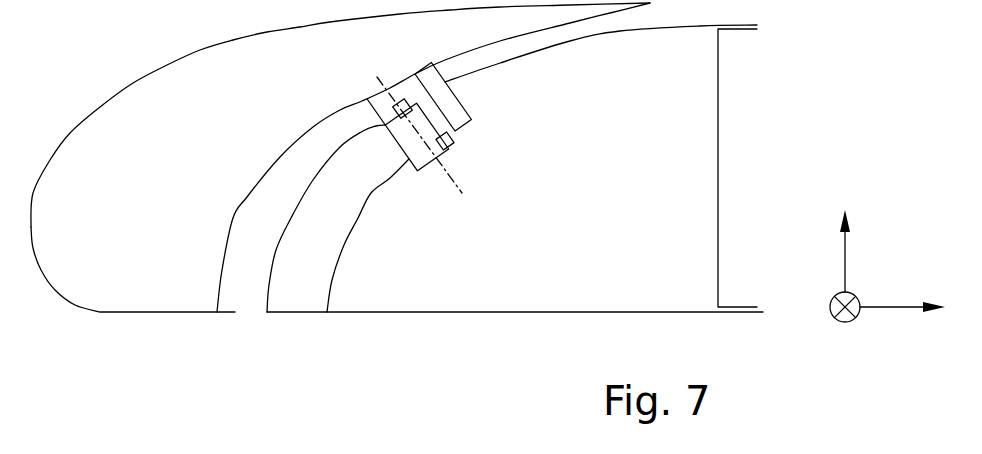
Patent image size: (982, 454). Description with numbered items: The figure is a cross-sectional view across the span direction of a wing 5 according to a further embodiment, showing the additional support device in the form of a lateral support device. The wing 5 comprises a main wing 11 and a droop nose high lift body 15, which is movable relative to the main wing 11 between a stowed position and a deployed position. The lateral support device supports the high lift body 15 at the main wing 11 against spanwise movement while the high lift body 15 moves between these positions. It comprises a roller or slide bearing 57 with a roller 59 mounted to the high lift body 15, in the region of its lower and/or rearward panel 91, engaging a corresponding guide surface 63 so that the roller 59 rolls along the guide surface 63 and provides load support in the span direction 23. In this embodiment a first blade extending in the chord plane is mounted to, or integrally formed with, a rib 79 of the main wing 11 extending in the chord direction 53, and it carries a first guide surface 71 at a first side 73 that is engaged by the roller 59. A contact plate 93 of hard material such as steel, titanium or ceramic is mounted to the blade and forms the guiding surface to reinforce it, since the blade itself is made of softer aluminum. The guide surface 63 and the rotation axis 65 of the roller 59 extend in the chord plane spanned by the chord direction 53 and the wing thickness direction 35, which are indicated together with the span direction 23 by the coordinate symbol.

The wing 5 is at (112, 75).
The high lift body 15 is at (179, 191).
The lower and/or rearward panel 91 is at (247, 197).
The contact plate 93 is at (303, 295).
The guide surface 63 is at (317, 265).
The first guide surface 71 is at (547, 147).
The first side 73 is at (338, 227).
The roller or slide bearing 57 is at (441, 133).
The roller 59 is at (417, 142).
The rotation axis 65 is at (453, 181).
The rib 79 is at (692, 191).
The main wing 11 is at (775, 191).
The span direction 23 is at (840, 322).
The wing thickness direction 35 is at (847, 248).
The chord direction 53 is at (900, 309).